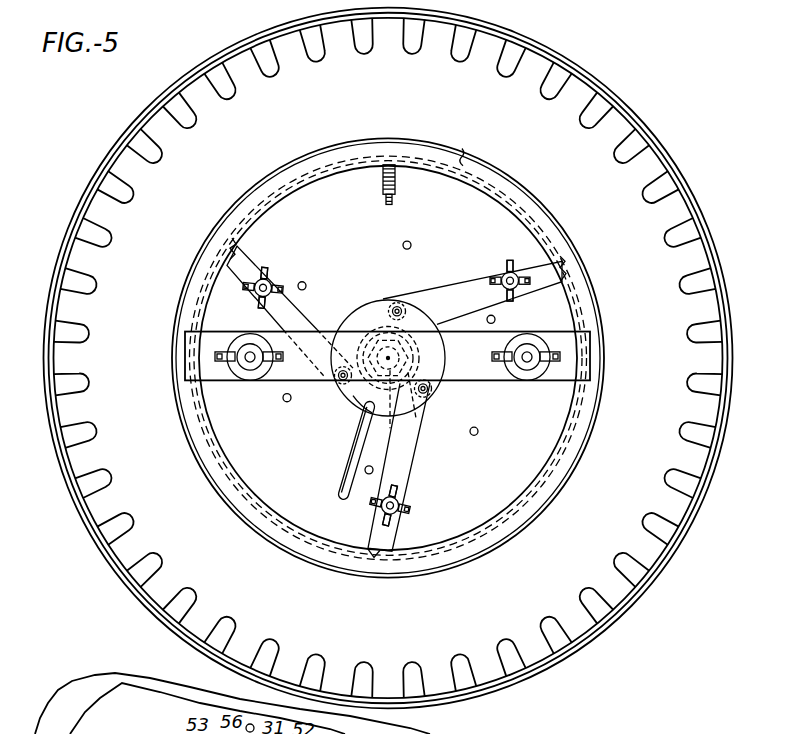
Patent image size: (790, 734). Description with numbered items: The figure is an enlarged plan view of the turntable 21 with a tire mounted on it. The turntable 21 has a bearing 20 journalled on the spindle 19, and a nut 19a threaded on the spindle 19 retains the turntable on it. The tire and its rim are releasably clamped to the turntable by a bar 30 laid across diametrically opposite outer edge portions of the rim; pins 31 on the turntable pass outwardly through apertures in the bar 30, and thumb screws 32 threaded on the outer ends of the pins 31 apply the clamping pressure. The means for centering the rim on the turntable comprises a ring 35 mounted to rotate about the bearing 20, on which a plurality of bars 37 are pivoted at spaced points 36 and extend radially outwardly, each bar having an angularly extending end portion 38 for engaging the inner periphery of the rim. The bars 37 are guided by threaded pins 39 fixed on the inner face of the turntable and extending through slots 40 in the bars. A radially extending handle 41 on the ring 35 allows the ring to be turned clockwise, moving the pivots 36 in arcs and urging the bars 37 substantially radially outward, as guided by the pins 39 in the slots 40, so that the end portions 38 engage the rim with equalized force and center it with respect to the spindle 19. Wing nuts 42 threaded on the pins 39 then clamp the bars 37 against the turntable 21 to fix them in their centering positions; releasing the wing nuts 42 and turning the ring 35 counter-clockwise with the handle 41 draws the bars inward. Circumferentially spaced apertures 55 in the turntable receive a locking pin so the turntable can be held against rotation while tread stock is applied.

The spindle 19 is at (391, 408).
The nut 19a is at (441, 327).
The bearing 20 is at (380, 330).
The turntable 21 is at (560, 425).
The bar 30 is at (500, 335).
The pins 31 is at (250, 362).
The thumb screws 32 is at (222, 347).
The ring 35 is at (353, 395).
The spaced points 36 is at (397, 306).
The bars 37 is at (447, 286).
The angularly extending end portions 38 is at (232, 240).
The threaded pins 39 is at (510, 272).
The slots 40 is at (498, 282).
The handle 41 is at (356, 457).
The wing nuts 42 is at (282, 290).
The apertures 55 is at (408, 243).